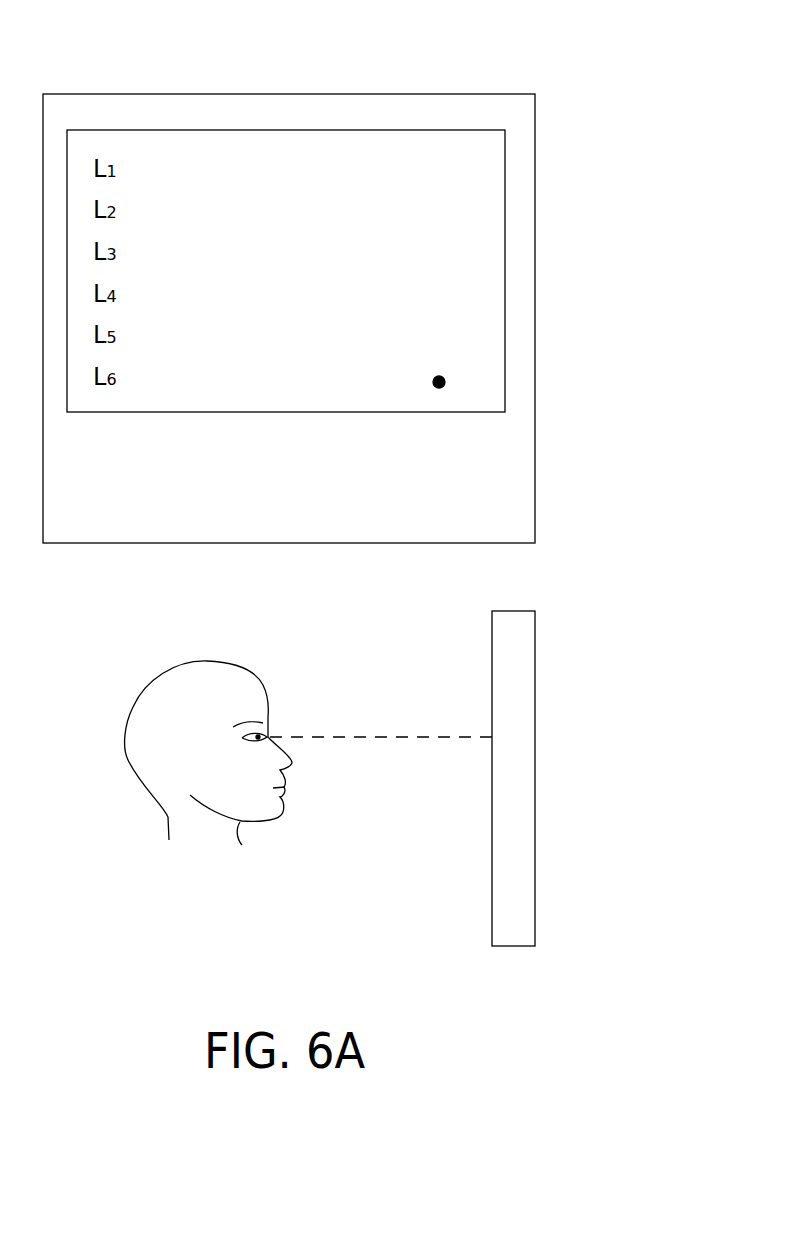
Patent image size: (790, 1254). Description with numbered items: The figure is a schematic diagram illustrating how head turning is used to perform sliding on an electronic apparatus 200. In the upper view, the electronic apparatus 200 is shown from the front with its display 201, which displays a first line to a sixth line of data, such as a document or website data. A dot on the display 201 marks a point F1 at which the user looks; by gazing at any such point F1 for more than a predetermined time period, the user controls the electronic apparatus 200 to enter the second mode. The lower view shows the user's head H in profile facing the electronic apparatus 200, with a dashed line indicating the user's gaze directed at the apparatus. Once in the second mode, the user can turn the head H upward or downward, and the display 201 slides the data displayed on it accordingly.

The electronic apparatus 200 is at (535, 139).
The display 201 is at (505, 198).
The point of the display F1 is at (445, 380).
The head H is at (126, 740).